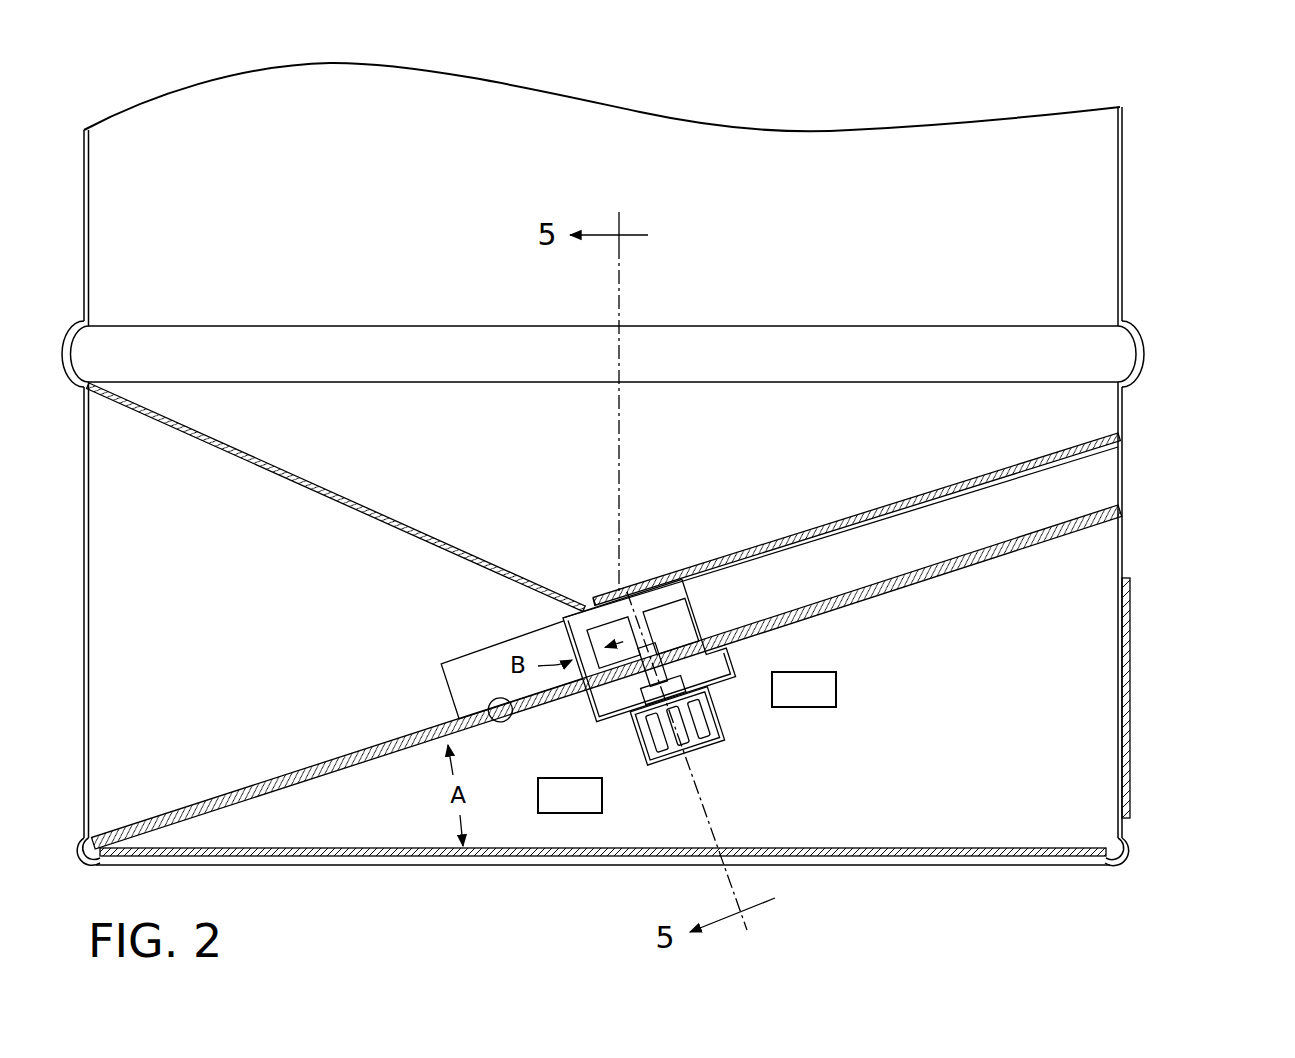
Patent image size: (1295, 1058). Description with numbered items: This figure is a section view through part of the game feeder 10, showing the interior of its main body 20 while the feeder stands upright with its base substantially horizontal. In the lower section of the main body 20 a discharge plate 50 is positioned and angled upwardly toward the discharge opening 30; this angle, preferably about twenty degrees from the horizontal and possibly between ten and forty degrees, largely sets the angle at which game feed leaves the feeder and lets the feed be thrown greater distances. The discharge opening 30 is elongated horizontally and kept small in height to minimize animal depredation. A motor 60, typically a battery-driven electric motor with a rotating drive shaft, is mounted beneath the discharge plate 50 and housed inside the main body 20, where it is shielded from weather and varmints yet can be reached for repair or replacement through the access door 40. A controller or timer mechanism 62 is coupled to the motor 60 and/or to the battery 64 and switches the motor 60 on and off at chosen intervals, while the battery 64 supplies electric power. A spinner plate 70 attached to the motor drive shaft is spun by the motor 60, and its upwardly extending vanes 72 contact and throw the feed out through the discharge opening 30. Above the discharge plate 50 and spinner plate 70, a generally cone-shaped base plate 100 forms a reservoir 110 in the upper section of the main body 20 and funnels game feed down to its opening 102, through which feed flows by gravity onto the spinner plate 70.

The game feeder 10 is at (669, 454).
The main body 20 is at (1123, 219).
The discharge opening 30 is at (1097, 481).
The access door 40 is at (1131, 666).
The discharge plate 50 is at (875, 599).
The motor 60 is at (707, 727).
The controller or timer mechanism 62 is at (628, 733).
The battery 64 is at (717, 708).
The spinner plate 70 is at (708, 632).
The vanes 72 is at (697, 622).
The base plate 100 is at (285, 470).
The opening 102 is at (607, 599).
The reservoir 110 is at (866, 429).